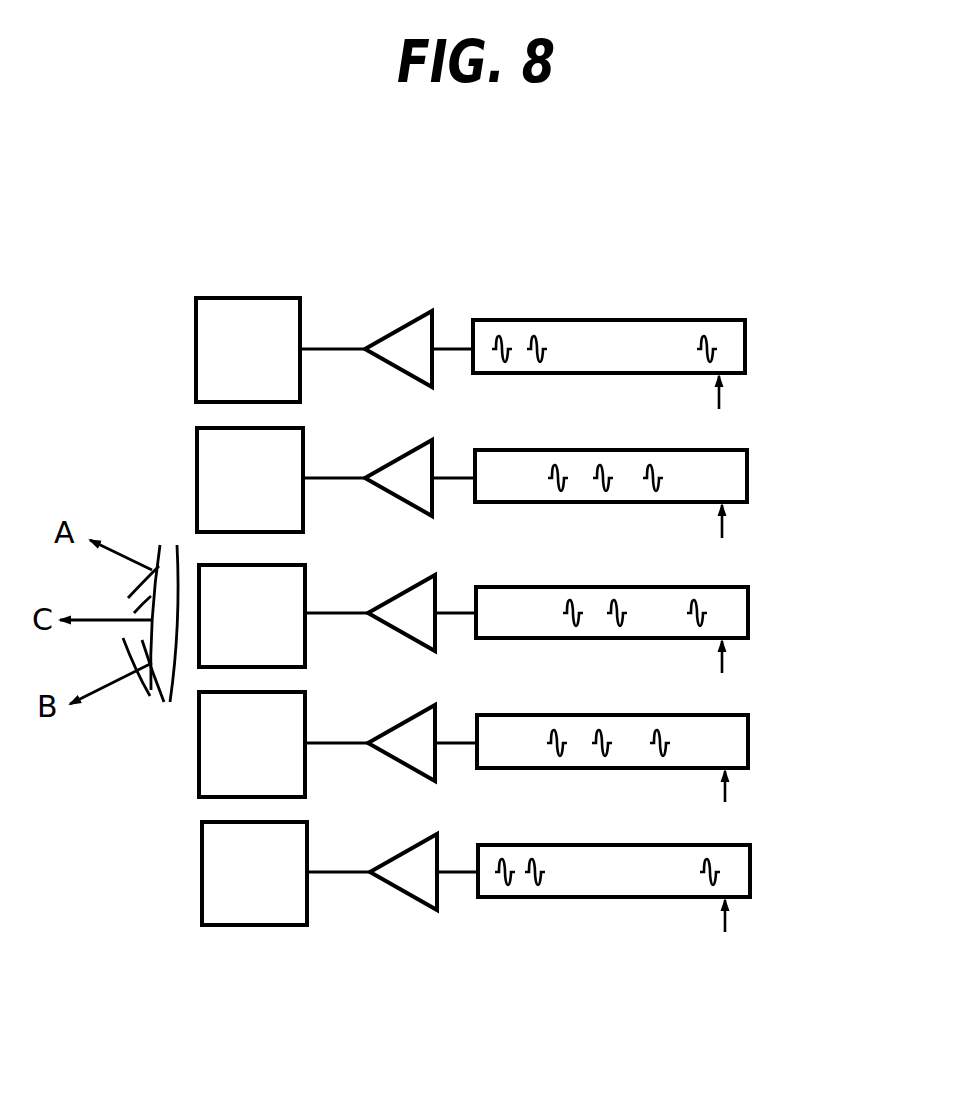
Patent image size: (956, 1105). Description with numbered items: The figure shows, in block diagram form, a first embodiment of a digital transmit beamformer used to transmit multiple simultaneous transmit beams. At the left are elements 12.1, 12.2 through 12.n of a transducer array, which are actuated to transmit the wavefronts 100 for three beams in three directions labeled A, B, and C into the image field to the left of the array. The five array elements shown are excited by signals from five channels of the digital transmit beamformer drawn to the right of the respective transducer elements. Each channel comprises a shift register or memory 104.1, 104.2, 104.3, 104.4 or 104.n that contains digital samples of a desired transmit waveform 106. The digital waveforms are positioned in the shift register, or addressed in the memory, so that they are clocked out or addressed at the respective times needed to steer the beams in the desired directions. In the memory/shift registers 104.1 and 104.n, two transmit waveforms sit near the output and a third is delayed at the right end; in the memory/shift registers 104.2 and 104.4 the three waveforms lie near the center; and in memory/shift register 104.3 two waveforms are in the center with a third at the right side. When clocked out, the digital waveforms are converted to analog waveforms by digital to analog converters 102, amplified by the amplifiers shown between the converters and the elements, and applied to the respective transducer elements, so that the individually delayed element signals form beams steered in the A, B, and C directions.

The transducer array element 12.1 is at (196, 349).
The transducer array element 12.2 is at (197, 475).
The transducer array element 12.n is at (202, 871).
The digital to analog converter 102 is at (400, 326).
The shift register or memory 104.1 is at (745, 348).
The shift register or memory 104.2 is at (747, 477).
The shift register or memory 104.3 is at (748, 609).
The shift register or memory 104.4 is at (748, 738).
The shift register or memory 104.n is at (750, 870).
The transmit waveform 106 is at (718, 306).
The wavefronts 100 is at (140, 699).